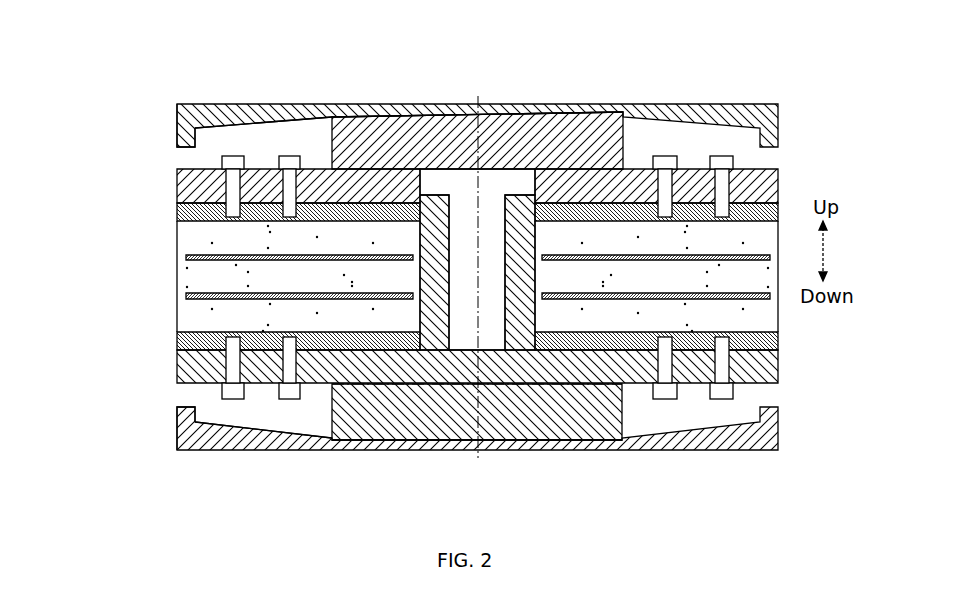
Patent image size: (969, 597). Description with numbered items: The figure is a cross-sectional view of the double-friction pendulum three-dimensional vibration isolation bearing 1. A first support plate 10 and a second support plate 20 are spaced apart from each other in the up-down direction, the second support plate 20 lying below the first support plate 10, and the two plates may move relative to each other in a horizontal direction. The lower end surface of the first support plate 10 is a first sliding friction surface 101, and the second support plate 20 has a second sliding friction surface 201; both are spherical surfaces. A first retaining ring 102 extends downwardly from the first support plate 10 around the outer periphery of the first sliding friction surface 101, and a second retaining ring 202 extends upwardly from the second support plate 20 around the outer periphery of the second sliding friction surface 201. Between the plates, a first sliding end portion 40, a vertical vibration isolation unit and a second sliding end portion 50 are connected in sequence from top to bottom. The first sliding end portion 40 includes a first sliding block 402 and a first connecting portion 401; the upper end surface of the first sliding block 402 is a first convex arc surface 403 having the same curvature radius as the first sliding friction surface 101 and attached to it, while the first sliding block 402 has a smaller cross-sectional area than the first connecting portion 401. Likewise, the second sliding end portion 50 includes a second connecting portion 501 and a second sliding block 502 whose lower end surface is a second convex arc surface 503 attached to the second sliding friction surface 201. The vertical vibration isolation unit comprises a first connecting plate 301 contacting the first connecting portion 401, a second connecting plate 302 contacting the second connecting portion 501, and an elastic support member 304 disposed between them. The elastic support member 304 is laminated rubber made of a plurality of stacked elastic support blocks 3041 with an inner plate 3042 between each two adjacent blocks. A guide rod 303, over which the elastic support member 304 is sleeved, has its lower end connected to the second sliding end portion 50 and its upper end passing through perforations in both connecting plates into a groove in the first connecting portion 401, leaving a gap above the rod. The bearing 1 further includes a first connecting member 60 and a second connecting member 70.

The double-friction pendulum three-dimensional vibration isolation bearing 1 is at (142, 63).
The first support plate 10 is at (237, 110).
The first sliding friction surface 101 is at (290, 104).
The first retaining ring 102 is at (177, 128).
The second support plate 20 is at (233, 450).
The second sliding friction surface 201 is at (291, 438).
The second retaining ring 202 is at (177, 415).
The first sliding end portion 40 is at (539, 134).
The first connecting portion 401 is at (745, 178).
The first sliding block 402 is at (603, 142).
The first convex arc surface 403 is at (590, 110).
The second sliding end portion 50 is at (539, 410).
The second connecting portion 501 is at (780, 382).
The second sliding block 502 is at (623, 407).
The second convex arc surface 503 is at (690, 447).
The first connecting member 60 is at (222, 160).
The second connecting member 70 is at (225, 390).
The first connecting plate 301 is at (177, 208).
The second connecting plate 302 is at (177, 340).
The guide rod 303 is at (517, 195).
The elastic support member 304 is at (399, 276).
The elastic support blocks 3041 is at (200, 276).
The inner plates 3042 is at (187, 295).